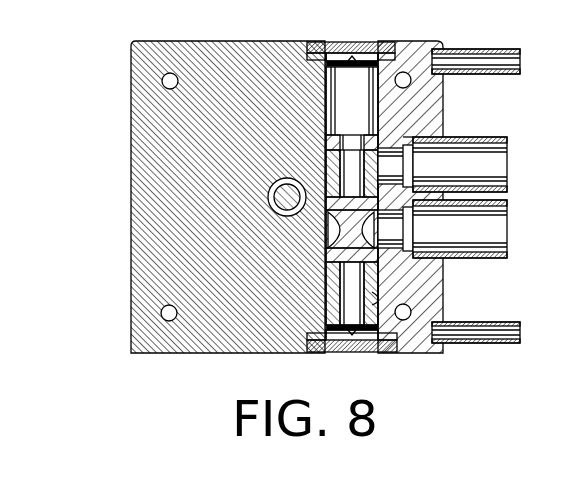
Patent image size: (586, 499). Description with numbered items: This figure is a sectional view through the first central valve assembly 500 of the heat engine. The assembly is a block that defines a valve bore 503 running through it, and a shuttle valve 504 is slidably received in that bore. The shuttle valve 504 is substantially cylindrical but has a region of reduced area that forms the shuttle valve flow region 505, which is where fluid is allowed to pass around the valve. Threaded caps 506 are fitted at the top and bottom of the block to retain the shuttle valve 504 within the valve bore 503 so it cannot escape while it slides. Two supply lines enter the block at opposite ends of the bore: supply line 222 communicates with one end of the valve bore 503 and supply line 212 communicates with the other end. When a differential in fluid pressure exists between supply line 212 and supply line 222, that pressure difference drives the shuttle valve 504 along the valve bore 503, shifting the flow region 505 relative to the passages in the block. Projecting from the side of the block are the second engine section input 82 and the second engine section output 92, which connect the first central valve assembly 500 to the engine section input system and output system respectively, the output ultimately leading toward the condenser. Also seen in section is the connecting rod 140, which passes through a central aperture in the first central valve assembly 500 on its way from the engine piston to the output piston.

The first central valve assembly 500 is at (152, 47).
The connecting rod 140 is at (276, 180).
The threaded caps 506 is at (355, 42).
The shuttle valve flow region 505 is at (330, 229).
The supply line 222 is at (475, 48).
The supply line 212 is at (492, 346).
The second engine section input 82 is at (500, 160).
The second engine section output 92 is at (497, 227).
The shuttle valve 504 is at (418, 137).
The valve bore 503 is at (372, 299).